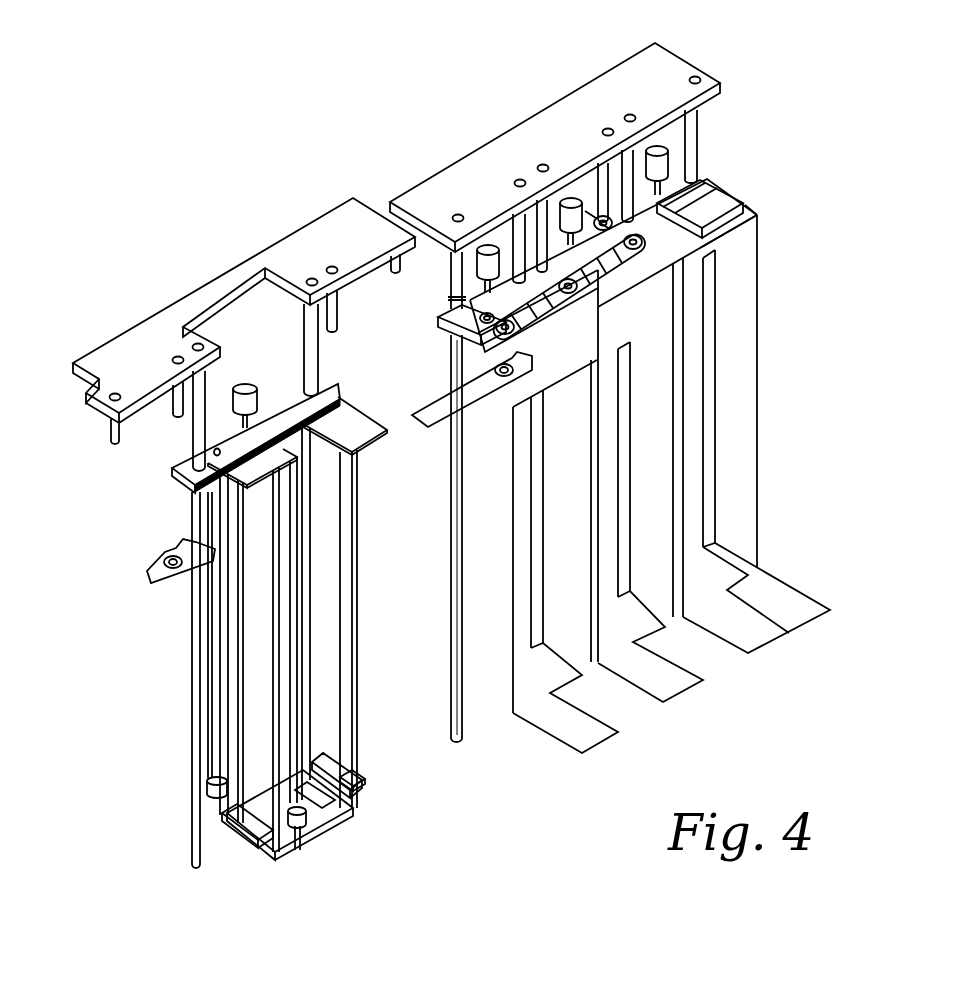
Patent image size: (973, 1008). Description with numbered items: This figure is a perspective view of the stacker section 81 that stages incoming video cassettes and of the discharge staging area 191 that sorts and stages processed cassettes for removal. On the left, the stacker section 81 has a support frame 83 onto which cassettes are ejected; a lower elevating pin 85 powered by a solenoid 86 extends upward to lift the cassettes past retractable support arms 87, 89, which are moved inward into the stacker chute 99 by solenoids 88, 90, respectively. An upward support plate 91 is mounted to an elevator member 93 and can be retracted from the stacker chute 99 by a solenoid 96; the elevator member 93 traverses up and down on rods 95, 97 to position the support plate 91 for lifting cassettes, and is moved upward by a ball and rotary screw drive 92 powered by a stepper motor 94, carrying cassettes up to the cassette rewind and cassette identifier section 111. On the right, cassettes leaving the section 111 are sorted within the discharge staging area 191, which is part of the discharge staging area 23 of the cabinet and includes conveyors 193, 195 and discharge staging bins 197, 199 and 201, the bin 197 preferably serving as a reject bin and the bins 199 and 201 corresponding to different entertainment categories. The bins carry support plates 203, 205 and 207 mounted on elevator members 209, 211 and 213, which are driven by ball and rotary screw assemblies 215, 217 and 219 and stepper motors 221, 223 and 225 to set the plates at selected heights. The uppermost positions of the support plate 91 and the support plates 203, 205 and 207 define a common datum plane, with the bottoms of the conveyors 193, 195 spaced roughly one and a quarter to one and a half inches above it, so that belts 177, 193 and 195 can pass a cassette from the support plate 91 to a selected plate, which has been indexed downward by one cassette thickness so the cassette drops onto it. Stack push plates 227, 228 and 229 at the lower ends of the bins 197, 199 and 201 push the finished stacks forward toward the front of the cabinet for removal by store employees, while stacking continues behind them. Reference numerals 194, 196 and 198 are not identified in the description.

The discharge staging area 23 is at (735, 262).
The stacker section 81 is at (302, 508).
The support frame 83 is at (332, 806).
The lower elevating pin 85 is at (300, 848).
The solenoid 86 is at (310, 823).
The retractable support arm 87 is at (265, 842).
The solenoid 88 is at (238, 826).
The retractable support arm 89 is at (356, 774).
The solenoid 90 is at (327, 763).
The upward support plate 91 is at (283, 450).
The ball and rotary screw drive 92 is at (218, 642).
The elevator member 93 is at (183, 488).
The stepper motor 94 is at (212, 790).
The rod 95 is at (205, 431).
The solenoid 96 is at (267, 350).
The rod 97 is at (310, 320).
The stacker chute 99 is at (318, 562).
The cassette rewind and cassette identifier section 111 is at (232, 318).
The belt 177 is at (183, 552).
The cassette discharge staging area 191 is at (508, 137).
The conveyor 193 is at (470, 338).
The collar 194 is at (462, 297).
The conveyor 195 is at (700, 200).
The support rod 196 is at (632, 215).
The discharge staging bin 197 is at (490, 576).
The chain track bar 198 is at (570, 292).
The discharge bin 199 is at (650, 385).
The discharge bin 201 is at (735, 330).
The support plate 203 is at (530, 333).
The support plate 205 is at (660, 277).
The support plate 207 is at (735, 228).
The elevator member 209 is at (447, 330).
The elevator member 211 is at (575, 203).
The elevator member 213 is at (707, 185).
The ball and rotary screw assembly 215 is at (450, 243).
The ball and rotary screw assembly 217 is at (512, 228).
The ball and rotary screw assembly 219 is at (643, 190).
The stepper motor 221 is at (487, 250).
The stepper motor 223 is at (594, 216).
The stepper motor 225 is at (660, 153).
The stack push plate 227 is at (522, 653).
The stack push plate 228 is at (605, 608).
The stack push plate 229 is at (690, 548).